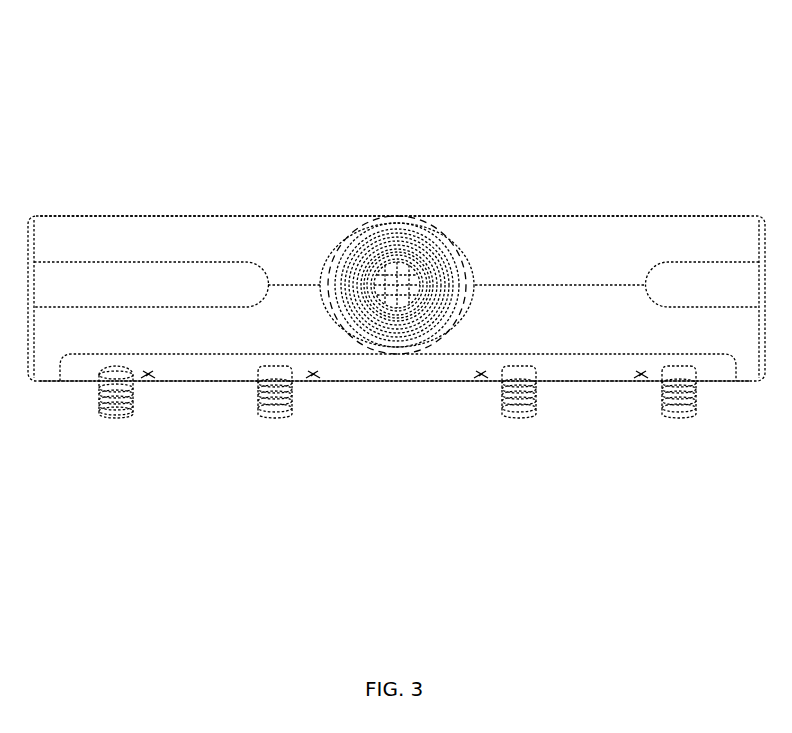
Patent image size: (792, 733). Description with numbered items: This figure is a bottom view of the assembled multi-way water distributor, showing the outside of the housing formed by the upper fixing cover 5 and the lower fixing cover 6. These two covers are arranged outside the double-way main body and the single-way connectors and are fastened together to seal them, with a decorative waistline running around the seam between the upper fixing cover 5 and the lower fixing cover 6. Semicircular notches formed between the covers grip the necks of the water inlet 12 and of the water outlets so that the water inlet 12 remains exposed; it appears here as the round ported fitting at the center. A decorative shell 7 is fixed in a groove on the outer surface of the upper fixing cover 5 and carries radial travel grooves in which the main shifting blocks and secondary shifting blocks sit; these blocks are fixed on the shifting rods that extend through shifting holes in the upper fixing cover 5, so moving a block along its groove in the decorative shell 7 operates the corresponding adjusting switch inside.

The upper fixing plate 5 is at (597, 322).
The lower fixing plate 6 is at (152, 240).
The decorative cover 7 is at (396, 368).
The water inlet 12 is at (396, 228).